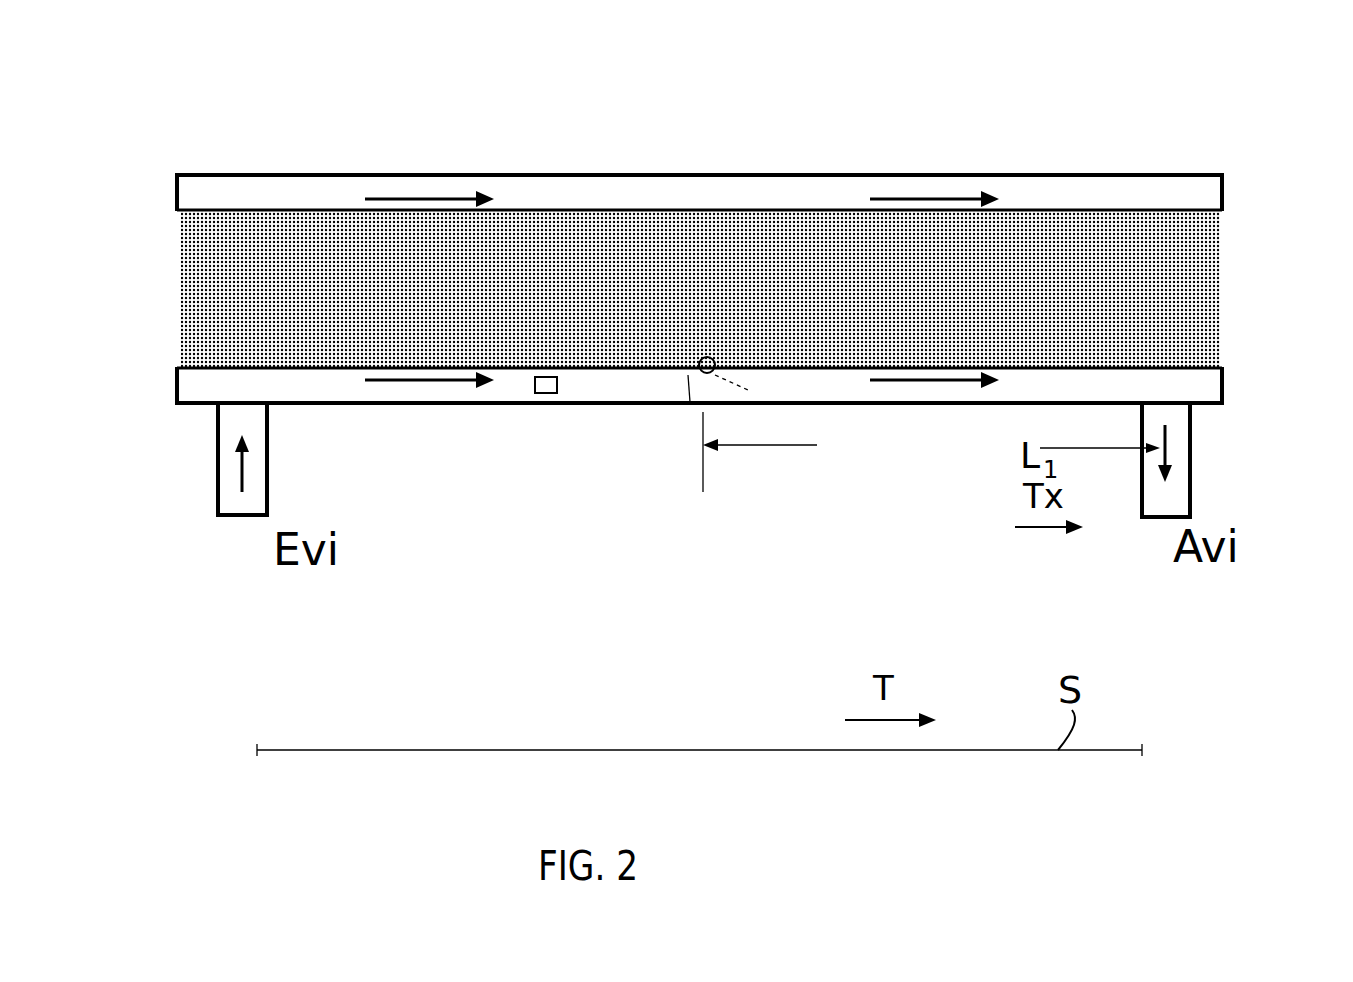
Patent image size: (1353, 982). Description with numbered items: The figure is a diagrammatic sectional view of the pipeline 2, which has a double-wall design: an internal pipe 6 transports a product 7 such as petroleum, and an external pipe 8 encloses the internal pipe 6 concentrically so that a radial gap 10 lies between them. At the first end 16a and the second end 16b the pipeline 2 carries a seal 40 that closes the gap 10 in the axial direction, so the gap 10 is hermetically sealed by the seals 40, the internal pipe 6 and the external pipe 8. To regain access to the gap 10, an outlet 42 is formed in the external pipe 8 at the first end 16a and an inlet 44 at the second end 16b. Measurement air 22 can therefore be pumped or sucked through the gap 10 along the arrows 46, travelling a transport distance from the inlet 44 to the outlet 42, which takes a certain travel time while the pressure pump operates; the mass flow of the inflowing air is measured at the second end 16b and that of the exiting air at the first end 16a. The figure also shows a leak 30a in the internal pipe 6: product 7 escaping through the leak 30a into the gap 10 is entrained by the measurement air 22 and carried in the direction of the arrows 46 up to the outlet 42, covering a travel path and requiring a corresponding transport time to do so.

The pipeline 2 is at (745, 142).
The internal pipe 6 is at (255, 208).
The product 7 is at (1093, 256).
The external pipe 8 is at (308, 178).
The gap 10 is at (575, 196).
The first end 16a is at (1222, 149).
The second end 16b is at (140, 489).
The measurement air 22 is at (542, 403).
The leak 30a is at (696, 372).
The seal 40 is at (175, 188).
The outlet 42 is at (1172, 498).
The inlet 44 is at (232, 505).
The arrows 46 is at (452, 186).